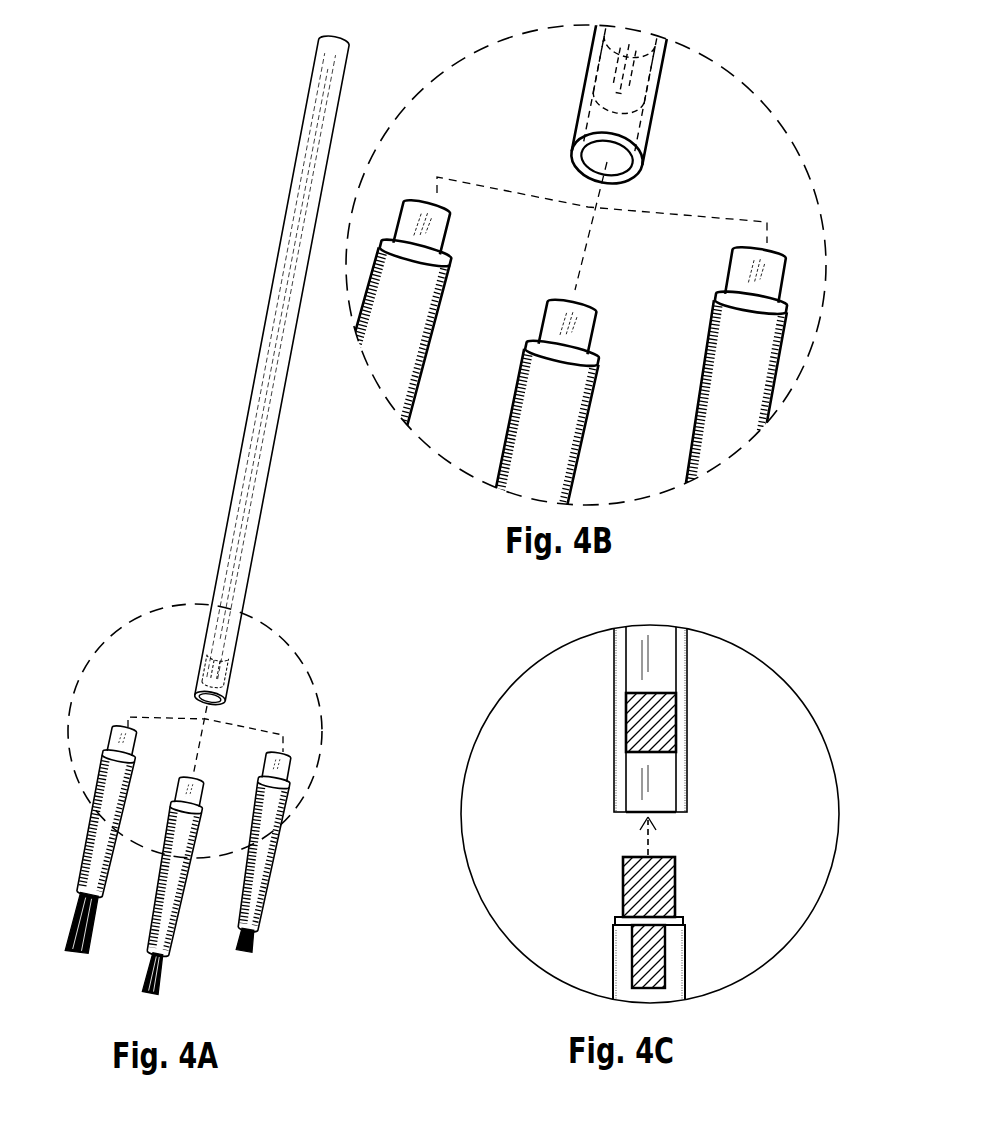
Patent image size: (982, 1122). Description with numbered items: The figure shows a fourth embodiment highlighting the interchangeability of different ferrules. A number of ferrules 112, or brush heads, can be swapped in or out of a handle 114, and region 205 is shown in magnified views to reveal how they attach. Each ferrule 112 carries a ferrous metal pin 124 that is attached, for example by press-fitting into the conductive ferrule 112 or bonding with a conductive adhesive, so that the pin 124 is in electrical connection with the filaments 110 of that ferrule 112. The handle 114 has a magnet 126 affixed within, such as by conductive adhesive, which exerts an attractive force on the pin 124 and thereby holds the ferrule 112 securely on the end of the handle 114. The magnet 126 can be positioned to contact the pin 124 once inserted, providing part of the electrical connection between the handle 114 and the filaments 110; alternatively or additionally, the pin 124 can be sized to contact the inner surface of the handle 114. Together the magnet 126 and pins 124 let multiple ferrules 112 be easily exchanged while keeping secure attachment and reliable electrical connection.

In FIG. 4A, the filaments 110 is at (86, 933).
In FIG. 4B, the ferrule 112 is at (403, 367).
In FIG. 4C, the ferrule 112 is at (623, 945).
In FIG. 4A, the handle 114 is at (270, 312).
In FIG. 4B, the handle 114 is at (767, 195).
In FIG. 4C, the handle 114 is at (641, 706).
In FIG. 4B, the ferrous metal pin 124 is at (433, 233).
In FIG. 4C, the ferrous metal pin 124 is at (623, 878).
In FIG. 4B, the magnet 126 is at (635, 70).
In FIG. 4C, the magnet 126 is at (650, 737).
In FIG. 4A, the region 205 is at (313, 683).
In FIG. 4B, the region 205 is at (768, 109).
In FIG. 4C, the region 205 is at (757, 665).